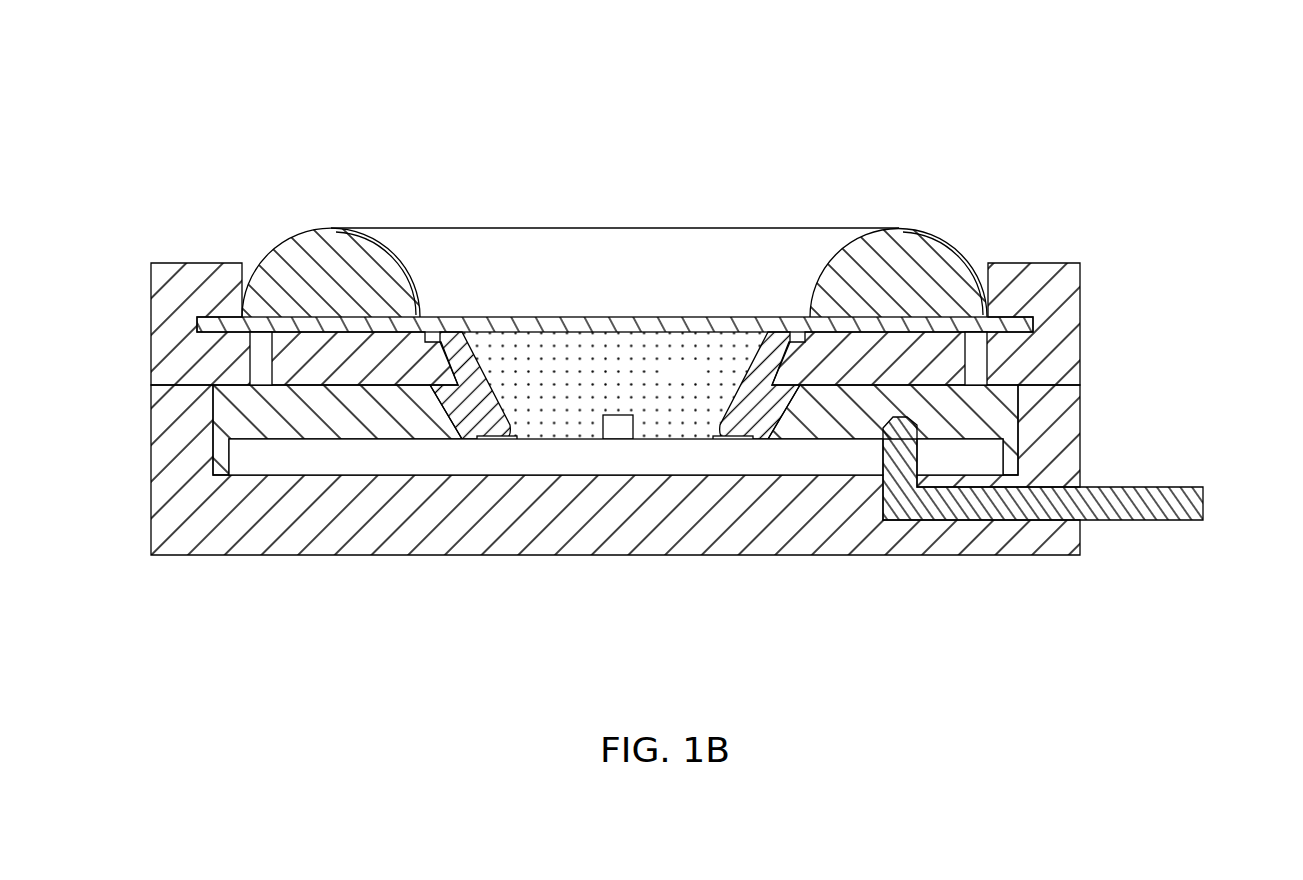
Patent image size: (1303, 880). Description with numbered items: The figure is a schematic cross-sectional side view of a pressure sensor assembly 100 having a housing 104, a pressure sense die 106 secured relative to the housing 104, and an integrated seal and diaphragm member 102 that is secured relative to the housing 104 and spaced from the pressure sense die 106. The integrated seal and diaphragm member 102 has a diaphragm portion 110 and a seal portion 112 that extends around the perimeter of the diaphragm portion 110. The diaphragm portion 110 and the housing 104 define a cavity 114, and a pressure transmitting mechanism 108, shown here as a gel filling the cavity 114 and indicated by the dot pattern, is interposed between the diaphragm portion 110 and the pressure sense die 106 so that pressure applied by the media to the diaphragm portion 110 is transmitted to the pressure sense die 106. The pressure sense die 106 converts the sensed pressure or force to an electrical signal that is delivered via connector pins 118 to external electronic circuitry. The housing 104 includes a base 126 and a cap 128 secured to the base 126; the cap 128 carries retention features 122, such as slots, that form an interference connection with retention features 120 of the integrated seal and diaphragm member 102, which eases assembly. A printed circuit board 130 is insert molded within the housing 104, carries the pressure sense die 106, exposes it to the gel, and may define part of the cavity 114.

The pressure sensor assembly 100 is at (800, 55).
The integrated seal and diaphragm member 102 is at (755, 212).
The housing 104 is at (1115, 366).
The pressure sense die 106 is at (617, 430).
The pressure transmitting mechanism 108 is at (652, 342).
The diaphragm portion 110 is at (530, 322).
The seal portion 112 is at (905, 242).
The cavity 114 is at (703, 384).
The connector pins 118 is at (1193, 505).
The retention features 120 is at (221, 330).
The retention features 122 is at (168, 310).
The base 126 is at (1073, 448).
The cap 128 is at (162, 357).
The printed circuit board 130 is at (757, 460).